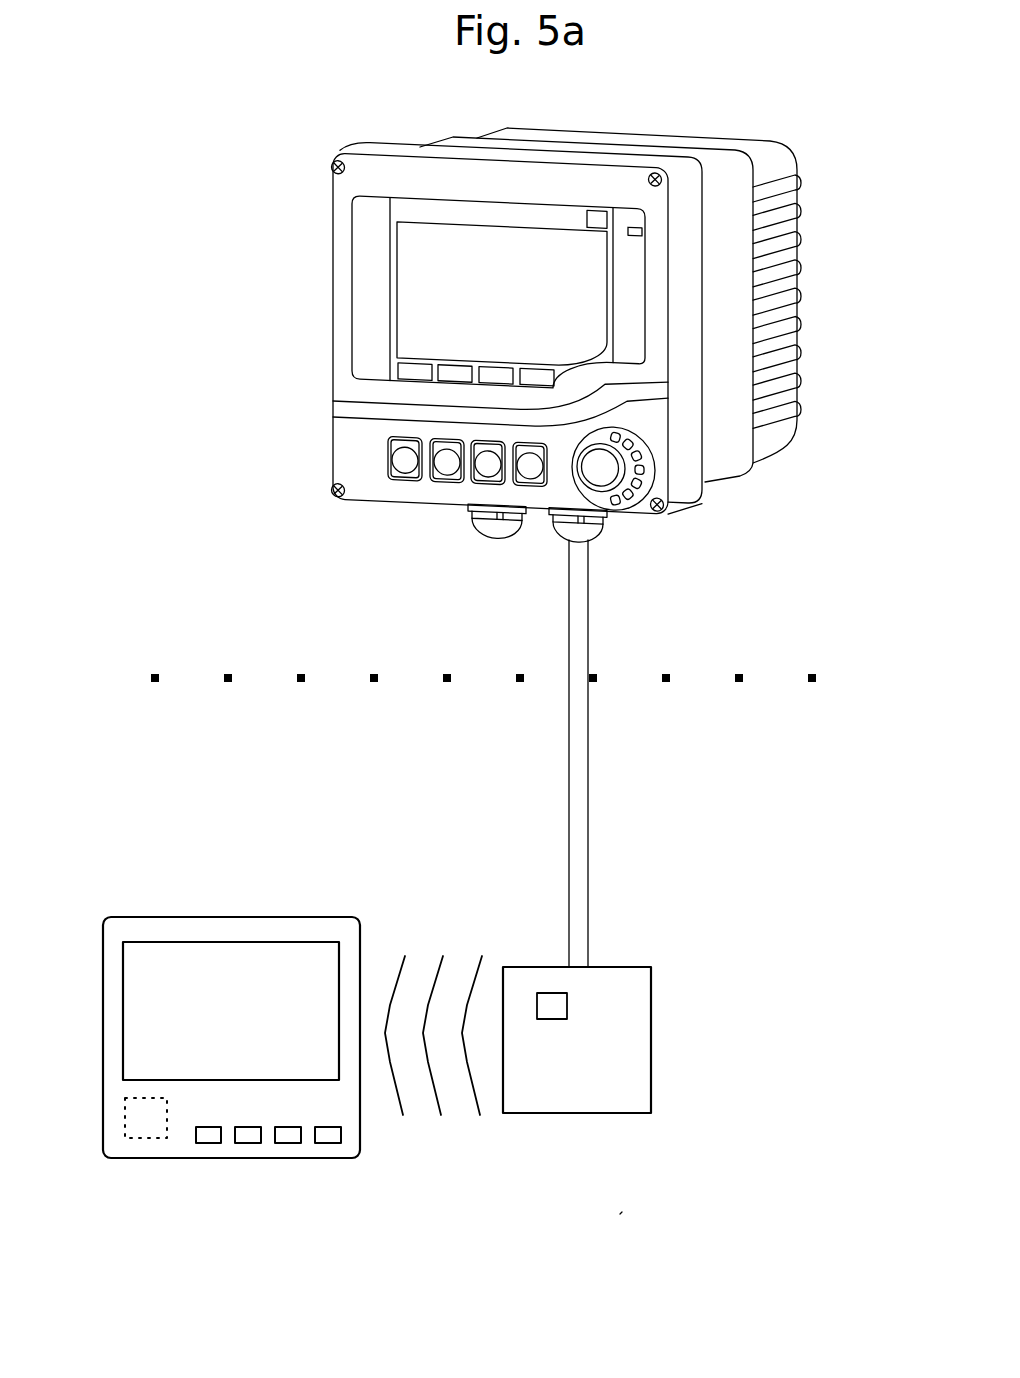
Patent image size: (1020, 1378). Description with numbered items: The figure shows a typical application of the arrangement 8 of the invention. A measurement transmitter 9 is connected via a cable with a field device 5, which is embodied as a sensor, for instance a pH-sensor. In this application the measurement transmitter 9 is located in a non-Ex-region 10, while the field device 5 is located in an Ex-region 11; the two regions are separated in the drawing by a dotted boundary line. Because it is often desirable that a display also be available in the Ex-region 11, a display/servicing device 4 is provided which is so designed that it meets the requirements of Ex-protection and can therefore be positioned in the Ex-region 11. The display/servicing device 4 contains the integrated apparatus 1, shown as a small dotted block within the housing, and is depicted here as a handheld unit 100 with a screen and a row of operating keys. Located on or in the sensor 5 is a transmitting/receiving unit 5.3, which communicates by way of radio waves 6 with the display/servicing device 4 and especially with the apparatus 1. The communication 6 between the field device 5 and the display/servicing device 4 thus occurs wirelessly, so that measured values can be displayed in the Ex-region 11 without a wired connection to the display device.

The measurement transmitter 9 is at (272, 229).
The non-Ex-region 10 is at (483, 643).
The Ex-region 11 is at (483, 715).
The handheld operating device 100 is at (133, 896).
The apparatus 1 is at (136, 1142).
The display/servicing device 4 is at (258, 1165).
The field device 5 is at (642, 1044).
The transmitting/receiving unit 5.3 is at (552, 1005).
The radio waves 6 is at (457, 1157).
The arrangement 8 is at (632, 1221).